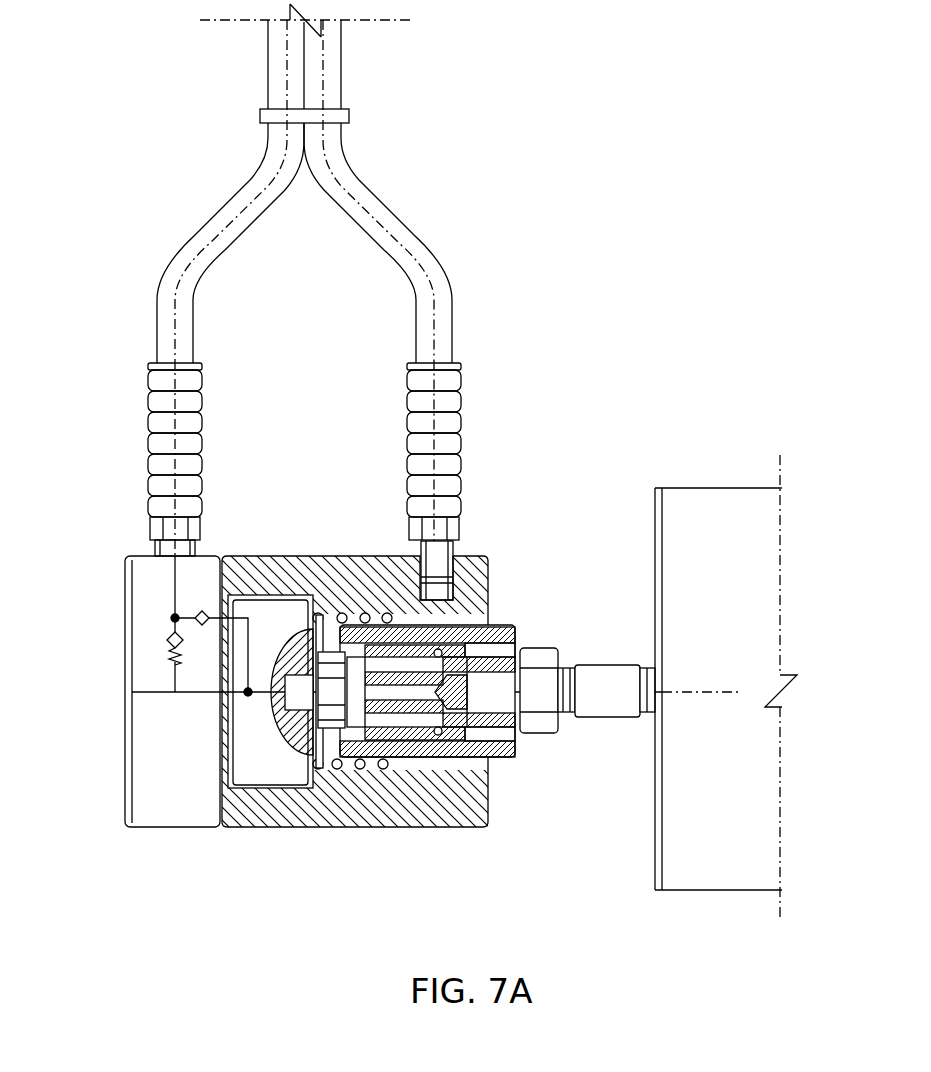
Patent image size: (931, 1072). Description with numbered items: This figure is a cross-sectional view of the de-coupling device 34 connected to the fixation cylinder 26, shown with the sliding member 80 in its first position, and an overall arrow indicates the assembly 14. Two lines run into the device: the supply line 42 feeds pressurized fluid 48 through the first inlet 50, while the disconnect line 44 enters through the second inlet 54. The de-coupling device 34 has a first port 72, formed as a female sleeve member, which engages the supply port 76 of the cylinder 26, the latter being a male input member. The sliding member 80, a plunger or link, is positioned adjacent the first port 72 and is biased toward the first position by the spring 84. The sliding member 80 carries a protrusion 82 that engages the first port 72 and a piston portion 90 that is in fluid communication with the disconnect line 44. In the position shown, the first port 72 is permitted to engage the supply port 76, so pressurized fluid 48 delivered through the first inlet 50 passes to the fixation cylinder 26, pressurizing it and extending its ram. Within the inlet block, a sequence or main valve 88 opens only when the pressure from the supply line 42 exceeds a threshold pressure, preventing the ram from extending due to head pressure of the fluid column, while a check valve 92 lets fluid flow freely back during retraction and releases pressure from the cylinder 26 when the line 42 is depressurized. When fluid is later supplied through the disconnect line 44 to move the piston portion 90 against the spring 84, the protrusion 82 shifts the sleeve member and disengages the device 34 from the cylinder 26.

The hydraulic actuator assembly 14 is at (662, 126).
The fixation cylinder 26 is at (733, 488).
The de-coupling device 34 is at (613, 471).
The supply line 42 is at (192, 236).
The disconnect line 44 is at (418, 236).
The pressurized fluid 48 is at (190, 696).
The first inlet 50 is at (153, 556).
The second inlet 54 is at (460, 556).
The first port 72 is at (385, 775).
The supply port 76 is at (507, 700).
The sliding member 80 is at (485, 727).
The protrusion 82 is at (486, 770).
The spring 84 is at (340, 773).
The main valve 88 is at (168, 640).
The piston portion 90 is at (425, 775).
The check valve 92 is at (205, 612).